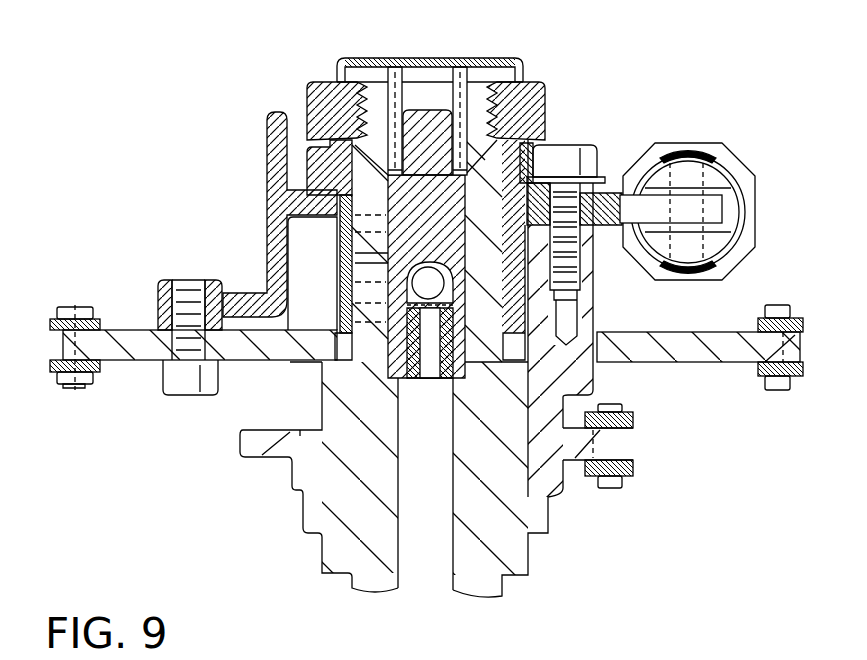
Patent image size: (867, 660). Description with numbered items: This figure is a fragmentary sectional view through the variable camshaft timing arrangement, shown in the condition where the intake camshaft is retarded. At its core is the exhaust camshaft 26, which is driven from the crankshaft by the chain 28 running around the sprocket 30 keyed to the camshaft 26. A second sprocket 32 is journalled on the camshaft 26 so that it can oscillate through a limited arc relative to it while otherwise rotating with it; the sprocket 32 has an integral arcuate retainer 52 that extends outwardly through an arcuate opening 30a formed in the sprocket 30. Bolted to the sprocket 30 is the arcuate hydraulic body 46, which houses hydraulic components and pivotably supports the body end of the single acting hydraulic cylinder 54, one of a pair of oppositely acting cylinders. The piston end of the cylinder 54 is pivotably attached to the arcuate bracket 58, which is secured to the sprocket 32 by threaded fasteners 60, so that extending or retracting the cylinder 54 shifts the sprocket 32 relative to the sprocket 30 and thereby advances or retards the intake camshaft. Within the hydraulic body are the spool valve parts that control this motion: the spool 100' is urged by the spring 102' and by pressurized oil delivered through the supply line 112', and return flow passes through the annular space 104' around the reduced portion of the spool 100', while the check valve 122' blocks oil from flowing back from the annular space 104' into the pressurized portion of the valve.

The exhaust camshaft 26 is at (330, 545).
The chain 28 is at (57, 383).
The sprocket 30 is at (146, 350).
The arcuate opening 30a is at (597, 334).
The sprocket 32 is at (268, 462).
The hydraulic body 46 is at (267, 158).
The arcuate retainer 52 is at (591, 297).
The hydraulic cylinder 54 is at (712, 180).
The arcuate bracket 58 is at (605, 200).
The threaded fastener 60 is at (565, 157).
The spool 100' is at (426, 195).
The spring 102' is at (448, 48).
The annular space 104' is at (212, 321).
The supply line 112' is at (412, 502).
The check valve 122' is at (308, 298).